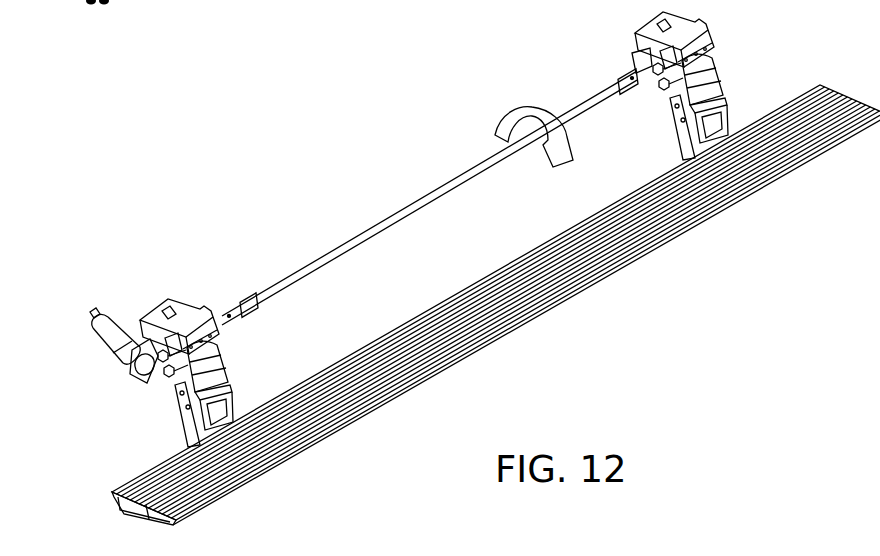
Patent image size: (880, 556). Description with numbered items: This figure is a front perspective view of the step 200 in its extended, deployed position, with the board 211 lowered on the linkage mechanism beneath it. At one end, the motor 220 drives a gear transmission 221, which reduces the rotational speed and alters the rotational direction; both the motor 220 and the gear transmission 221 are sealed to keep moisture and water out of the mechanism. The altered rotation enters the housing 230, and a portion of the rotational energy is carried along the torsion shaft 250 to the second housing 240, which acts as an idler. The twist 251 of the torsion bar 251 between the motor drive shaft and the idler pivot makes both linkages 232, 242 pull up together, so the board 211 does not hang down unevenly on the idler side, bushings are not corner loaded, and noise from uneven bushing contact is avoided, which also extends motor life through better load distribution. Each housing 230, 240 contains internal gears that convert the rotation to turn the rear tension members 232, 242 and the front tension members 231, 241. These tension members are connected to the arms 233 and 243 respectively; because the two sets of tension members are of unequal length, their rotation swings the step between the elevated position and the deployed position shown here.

The step 200 is at (213, 197).
The board 211 is at (556, 278).
The motor 220 is at (105, 350).
The gear transmission 221 is at (132, 375).
The housing 230 is at (185, 302).
The front tension member 231 is at (218, 362).
The rear tension member 232 is at (173, 370).
The arm 233 is at (183, 413).
The second housing 240 is at (640, 28).
The front tension member 241 is at (713, 67).
The rear tension member 242 is at (673, 80).
The arm 243 is at (727, 117).
The torsion shaft 250 is at (407, 205).
The torsion bar 251 is at (508, 113).